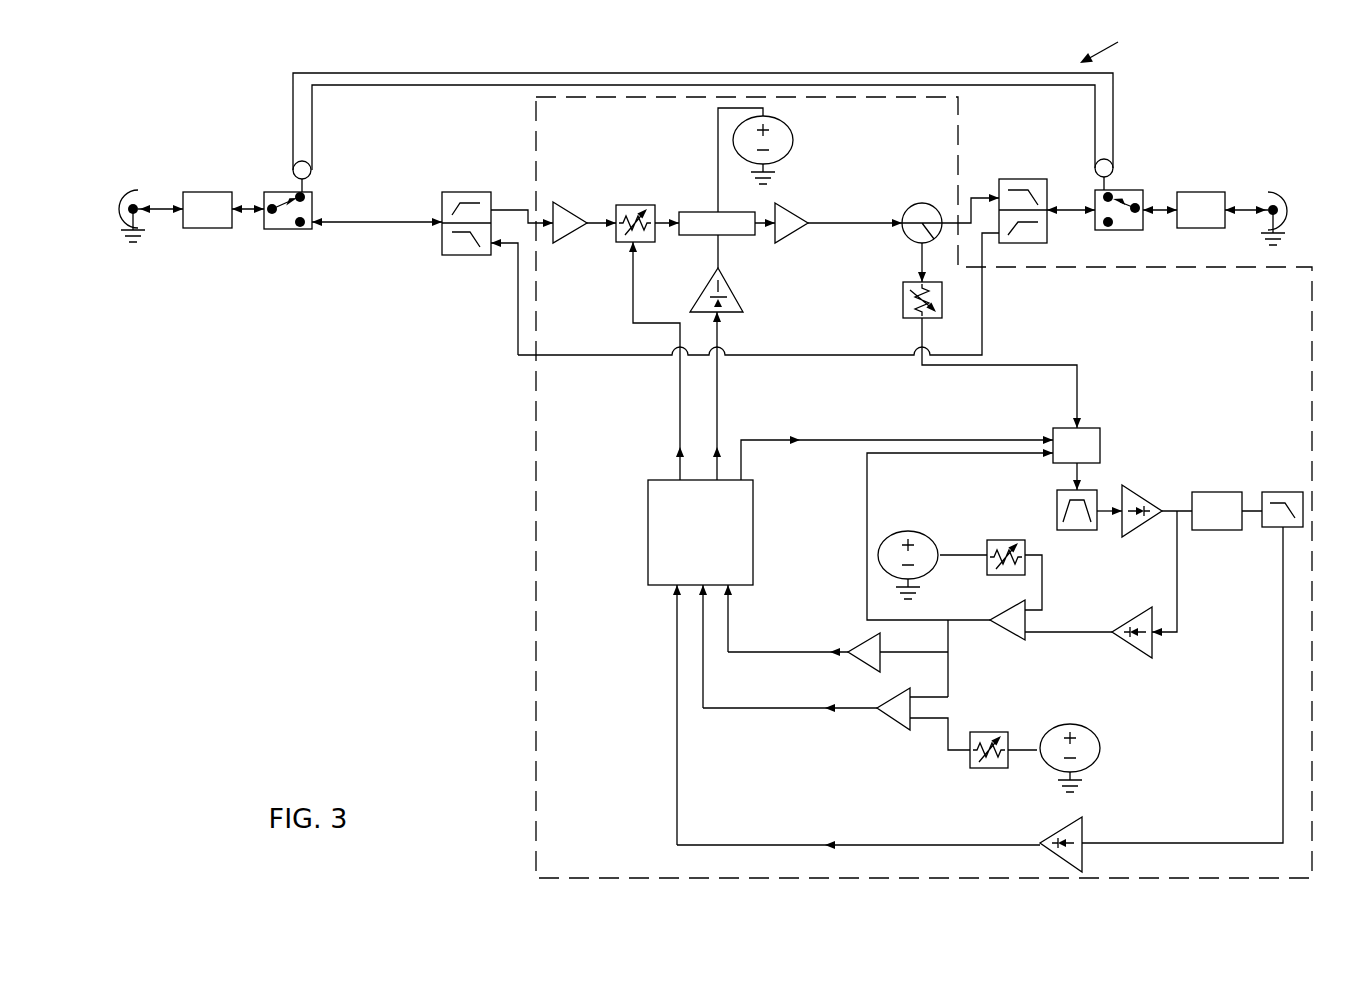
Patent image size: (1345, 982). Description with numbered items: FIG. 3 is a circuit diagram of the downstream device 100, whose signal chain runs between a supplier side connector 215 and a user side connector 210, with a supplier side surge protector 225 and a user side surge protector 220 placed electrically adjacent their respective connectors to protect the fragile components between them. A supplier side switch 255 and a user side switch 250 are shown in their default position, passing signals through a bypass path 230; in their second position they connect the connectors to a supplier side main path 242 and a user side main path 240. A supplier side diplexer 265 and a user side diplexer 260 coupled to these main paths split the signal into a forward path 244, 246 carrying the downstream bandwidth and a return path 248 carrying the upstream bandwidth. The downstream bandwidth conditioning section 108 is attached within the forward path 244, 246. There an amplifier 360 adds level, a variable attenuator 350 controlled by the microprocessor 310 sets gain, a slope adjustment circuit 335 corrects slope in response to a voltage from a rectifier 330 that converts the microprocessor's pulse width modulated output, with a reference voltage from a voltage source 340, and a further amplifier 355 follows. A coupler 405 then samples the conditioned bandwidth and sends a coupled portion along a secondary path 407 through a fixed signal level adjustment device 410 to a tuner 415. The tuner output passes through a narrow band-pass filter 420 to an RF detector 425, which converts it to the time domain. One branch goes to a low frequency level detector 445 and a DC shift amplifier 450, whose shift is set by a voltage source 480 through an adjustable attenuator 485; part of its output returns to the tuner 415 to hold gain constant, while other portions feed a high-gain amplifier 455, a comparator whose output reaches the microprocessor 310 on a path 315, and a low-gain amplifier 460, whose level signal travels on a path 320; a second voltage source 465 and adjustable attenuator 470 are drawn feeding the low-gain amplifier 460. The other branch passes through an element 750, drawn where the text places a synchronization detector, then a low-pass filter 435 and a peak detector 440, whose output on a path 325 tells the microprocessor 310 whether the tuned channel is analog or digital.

The downstream device 100 is at (1116, 47).
The downstream bandwidth conditioning section 108 is at (536, 534).
The user side connector 210 is at (1281, 191).
The supplier side connector 215 is at (123, 192).
The user side surge protector 220 is at (1201, 210).
The supplier side surge protector 225 is at (207, 210).
The bypass path 230 is at (658, 73).
The user side main path 240 is at (1062, 216).
The supplier side main path 242 is at (372, 224).
The forward path 244 is at (973, 192).
The forward path 246 is at (521, 208).
The return path 248 is at (518, 332).
The user side switch 250 is at (1125, 190).
The supplier side switch 255 is at (312, 192).
The user side diplexer 260 is at (1003, 179).
The supplier side diplexer 265 is at (446, 192).
The microprocessor 310 is at (700, 532).
The path 315 is at (762, 655).
The path 320 is at (780, 712).
The path 325 is at (776, 845).
The rectifier 330 is at (736, 283).
The slope adjustment circuit 335 is at (717, 223).
The voltage source 340 is at (792, 138).
The variable attenuator 350 is at (646, 205).
The amplifier 355 is at (796, 204).
The amplifier 360 is at (576, 203).
The coupler 405 is at (911, 206).
The secondary path 407 is at (918, 257).
The fixed signal level adjustment device 410 is at (905, 302).
The tuner 415 is at (1076, 445).
The band-pass filter 420 is at (1092, 490).
The RF detector 425 is at (1150, 493).
The low-pass filter 435 is at (1290, 492).
The peak detector 440 is at (1086, 831).
The low frequency level detector 445 is at (1136, 656).
The DC shift amplifier 450 is at (1006, 636).
The high-gain amplifier 455 is at (862, 639).
The low-gain amplifier 460 is at (889, 722).
The voltage source 465 is at (1101, 738).
The variable attenuator 470 is at (978, 732).
The voltage source 480 is at (900, 530).
The adjustable attenuator 485 is at (1018, 540).
The processor 750 is at (1217, 511).